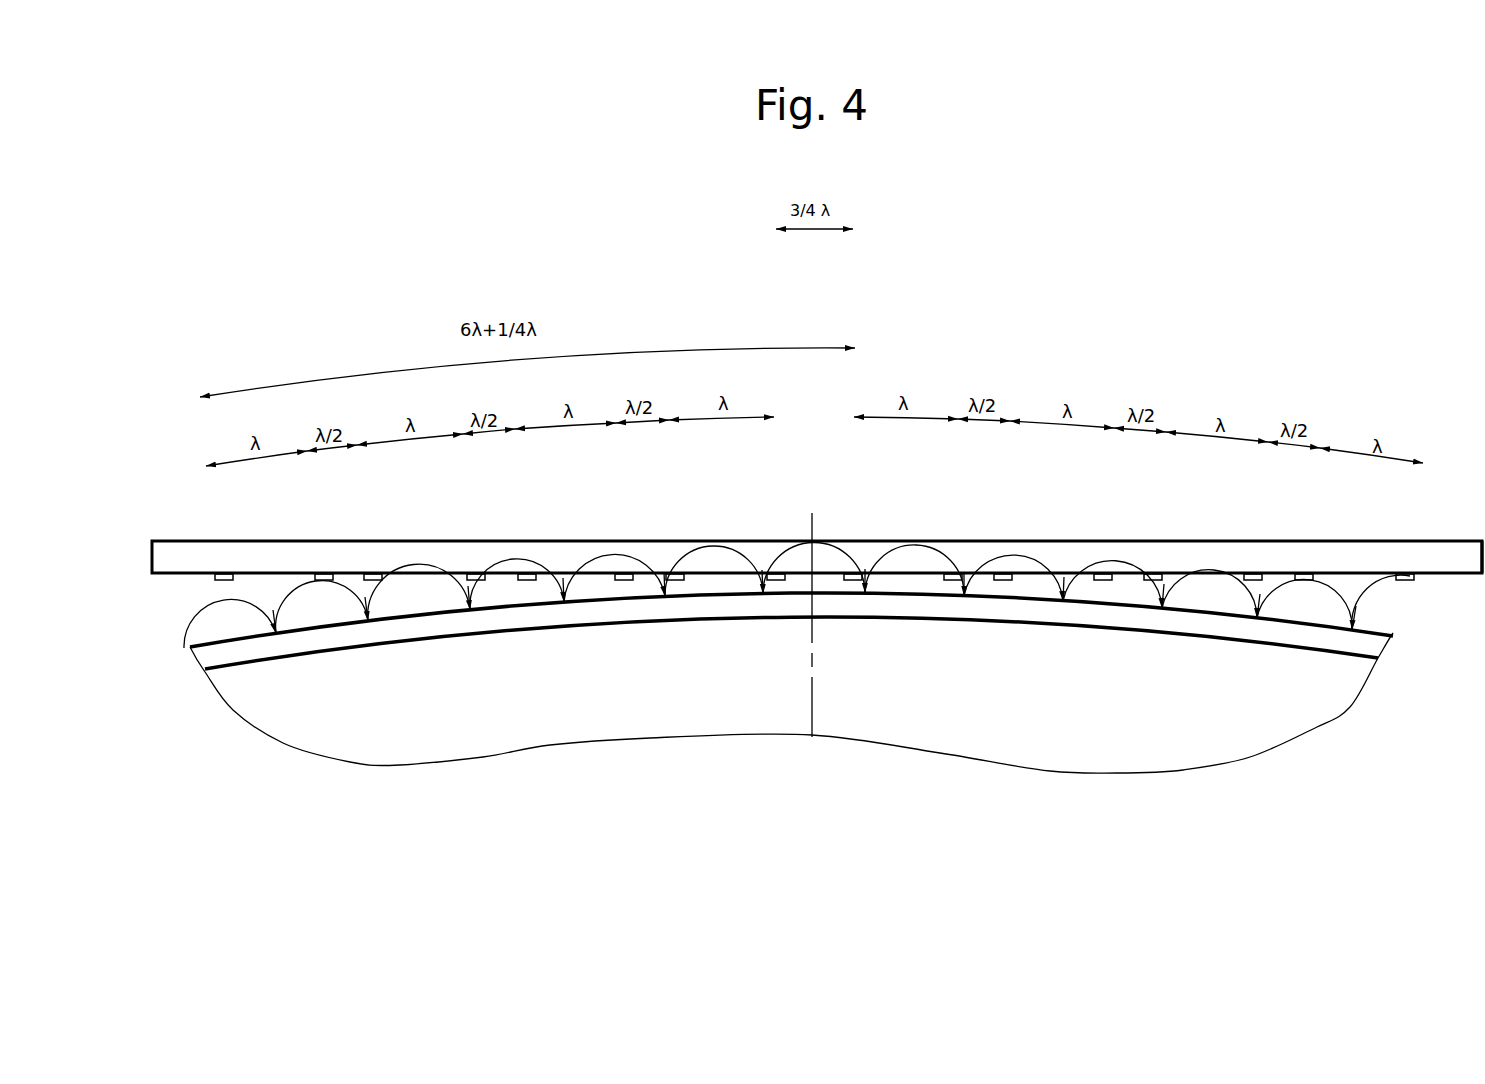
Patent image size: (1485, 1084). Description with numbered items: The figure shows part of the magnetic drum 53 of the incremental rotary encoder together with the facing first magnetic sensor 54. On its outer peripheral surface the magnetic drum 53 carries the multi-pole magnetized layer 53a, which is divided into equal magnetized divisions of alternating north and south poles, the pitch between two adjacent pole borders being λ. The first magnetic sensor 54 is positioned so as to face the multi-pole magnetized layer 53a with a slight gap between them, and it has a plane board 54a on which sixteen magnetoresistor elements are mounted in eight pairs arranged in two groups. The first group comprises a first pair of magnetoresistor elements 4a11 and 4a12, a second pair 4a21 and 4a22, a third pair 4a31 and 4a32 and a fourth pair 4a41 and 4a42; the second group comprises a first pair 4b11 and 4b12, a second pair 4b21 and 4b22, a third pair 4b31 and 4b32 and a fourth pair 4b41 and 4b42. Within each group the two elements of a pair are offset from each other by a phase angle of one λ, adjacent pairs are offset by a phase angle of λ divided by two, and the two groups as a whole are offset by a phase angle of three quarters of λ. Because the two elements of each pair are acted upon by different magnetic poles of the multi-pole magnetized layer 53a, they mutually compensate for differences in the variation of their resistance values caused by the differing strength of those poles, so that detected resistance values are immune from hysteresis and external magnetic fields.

The magnetoresistor element 4a11 is at (194, 388).
The magnetoresistor element 4a12 is at (330, 624).
The magnetoresistor element 4a21 is at (356, 433).
The magnetoresistor element 4a22 is at (478, 600).
The magnetoresistor element 4a31 is at (514, 417).
The magnetoresistor element 4a32 is at (615, 411).
The magnetoresistor element 4a41 is at (668, 408).
The magnetoresistor element 4a42 is at (771, 202).
The magnetoresistor element 4b11 is at (856, 202).
The magnetoresistor element 4b12 is at (959, 407).
The magnetoresistor element 4b21 is at (1011, 409).
The magnetoresistor element 4b22 is at (1115, 416).
The magnetoresistor element 4b31 is at (1167, 420).
The magnetoresistor element 4b32 is at (1249, 615).
The magnetoresistor element 4b41 is at (1322, 436).
The magnetoresistor element 4b42 is at (1396, 635).
The magnetic drum 53 is at (1183, 725).
The multi-pole magnetized layer 53a is at (1303, 633).
The first magnetic sensor 54 is at (925, 388).
The plane board 54a is at (1448, 552).